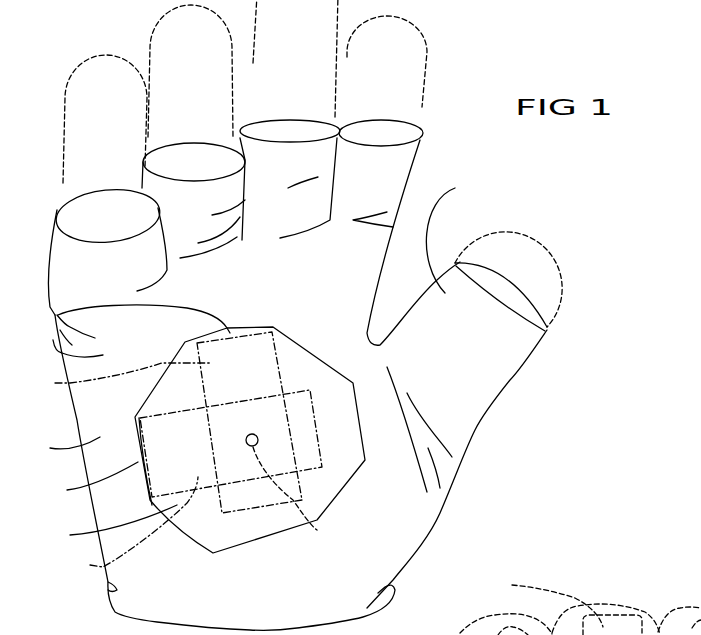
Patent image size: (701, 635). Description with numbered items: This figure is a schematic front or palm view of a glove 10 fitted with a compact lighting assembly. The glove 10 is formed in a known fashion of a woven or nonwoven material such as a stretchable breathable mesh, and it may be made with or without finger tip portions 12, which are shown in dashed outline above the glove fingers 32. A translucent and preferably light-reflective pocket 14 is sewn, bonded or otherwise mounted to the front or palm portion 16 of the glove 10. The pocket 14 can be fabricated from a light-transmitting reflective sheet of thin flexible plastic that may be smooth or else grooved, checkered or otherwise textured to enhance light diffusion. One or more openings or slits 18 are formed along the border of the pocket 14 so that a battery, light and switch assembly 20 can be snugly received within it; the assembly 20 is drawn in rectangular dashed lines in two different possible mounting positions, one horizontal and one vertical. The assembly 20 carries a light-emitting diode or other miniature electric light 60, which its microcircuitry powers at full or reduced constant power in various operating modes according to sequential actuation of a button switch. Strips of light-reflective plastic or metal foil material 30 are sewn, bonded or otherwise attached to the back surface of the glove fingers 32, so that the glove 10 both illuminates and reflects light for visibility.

The glove 10 is at (460, 508).
The finger tip portions 12 is at (167, 15).
The pocket 14 is at (113, 526).
The palm portion 16 is at (64, 448).
The openings or slits 18 is at (58, 316).
The battery, light and switch assembly 20 is at (122, 472).
The strips of light-reflective material 30 is at (505, 634).
The glove fingers 32 is at (385, 189).
The light-emitting diode 60 is at (317, 530).